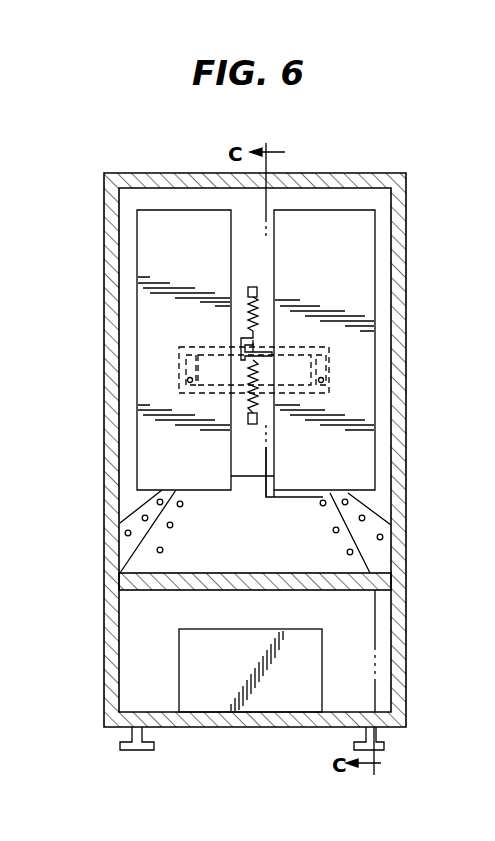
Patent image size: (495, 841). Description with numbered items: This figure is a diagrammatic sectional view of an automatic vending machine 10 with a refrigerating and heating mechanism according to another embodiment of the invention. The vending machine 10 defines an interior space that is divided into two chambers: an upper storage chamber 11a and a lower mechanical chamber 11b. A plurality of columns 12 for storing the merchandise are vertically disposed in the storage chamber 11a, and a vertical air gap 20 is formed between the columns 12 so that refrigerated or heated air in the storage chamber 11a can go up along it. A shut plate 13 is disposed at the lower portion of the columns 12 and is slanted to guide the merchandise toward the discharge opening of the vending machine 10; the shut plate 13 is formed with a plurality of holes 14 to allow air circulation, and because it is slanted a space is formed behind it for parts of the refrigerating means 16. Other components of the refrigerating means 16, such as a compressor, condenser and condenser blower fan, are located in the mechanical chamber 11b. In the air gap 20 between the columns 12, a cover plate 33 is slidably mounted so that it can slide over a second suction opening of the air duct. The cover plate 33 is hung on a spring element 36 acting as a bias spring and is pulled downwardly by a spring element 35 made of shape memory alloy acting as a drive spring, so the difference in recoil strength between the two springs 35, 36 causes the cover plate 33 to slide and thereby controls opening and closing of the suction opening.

The automatic vending machine 10 is at (397, 196).
The storage chamber 11a is at (385, 243).
The mechanical chamber 11b is at (365, 655).
The columns 12 is at (172, 222).
The shut plate 13 is at (332, 545).
The holes 14 is at (126, 533).
The refrigerating means 16 is at (312, 690).
The vertical air gap 20 is at (243, 262).
The cover plate 33 is at (258, 350).
The spring element 35 is at (246, 404).
The spring element 36 is at (255, 315).